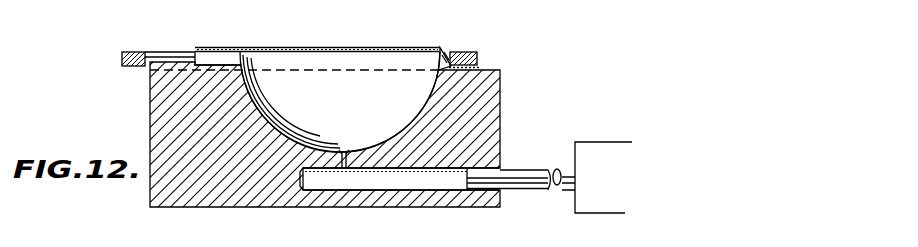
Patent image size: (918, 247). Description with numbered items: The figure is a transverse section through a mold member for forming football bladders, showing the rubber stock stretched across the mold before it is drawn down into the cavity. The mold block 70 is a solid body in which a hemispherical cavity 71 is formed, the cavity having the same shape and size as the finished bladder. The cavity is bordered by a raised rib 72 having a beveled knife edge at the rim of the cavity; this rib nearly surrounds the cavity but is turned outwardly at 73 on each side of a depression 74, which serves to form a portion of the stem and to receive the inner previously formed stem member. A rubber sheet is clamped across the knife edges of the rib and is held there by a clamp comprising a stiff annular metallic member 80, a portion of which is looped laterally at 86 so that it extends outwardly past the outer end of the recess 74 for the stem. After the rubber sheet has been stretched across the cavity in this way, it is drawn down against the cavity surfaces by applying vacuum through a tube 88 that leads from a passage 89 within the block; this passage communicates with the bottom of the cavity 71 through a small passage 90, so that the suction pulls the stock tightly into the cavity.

The mold block 70 is at (500, 88).
The cavity 71 is at (405, 130).
The raised rib 72 is at (446, 57).
The outwardly turned portion of rib 73 is at (196, 52).
The depression 74 is at (213, 60).
The annular metallic member 80 is at (477, 58).
The lateral loop of annulus 86 is at (140, 52).
The vacuum tube 88 is at (524, 180).
The passage 89 is at (425, 188).
The small passage 90 is at (350, 150).